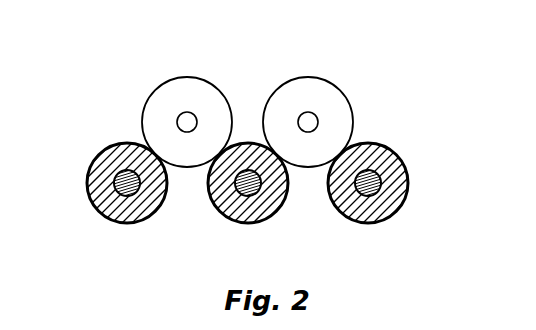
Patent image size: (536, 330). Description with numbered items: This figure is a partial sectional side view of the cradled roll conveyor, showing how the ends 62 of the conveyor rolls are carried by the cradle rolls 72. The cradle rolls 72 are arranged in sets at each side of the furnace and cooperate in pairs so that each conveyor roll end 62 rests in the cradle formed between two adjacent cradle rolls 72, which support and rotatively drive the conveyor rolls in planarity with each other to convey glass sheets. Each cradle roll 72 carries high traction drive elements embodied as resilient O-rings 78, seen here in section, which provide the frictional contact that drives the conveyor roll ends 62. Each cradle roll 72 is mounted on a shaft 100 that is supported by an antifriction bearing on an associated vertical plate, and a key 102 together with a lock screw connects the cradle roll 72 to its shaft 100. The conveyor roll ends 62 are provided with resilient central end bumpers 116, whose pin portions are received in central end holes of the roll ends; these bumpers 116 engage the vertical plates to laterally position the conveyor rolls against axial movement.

The conveyor roll ends 62 is at (247, 90).
The central end bumper 116 is at (190, 112).
The shaft 100 is at (247, 183).
The O-rings 78 is at (118, 143).
The cradle roll 72 is at (102, 200).
The key 102 is at (126, 170).